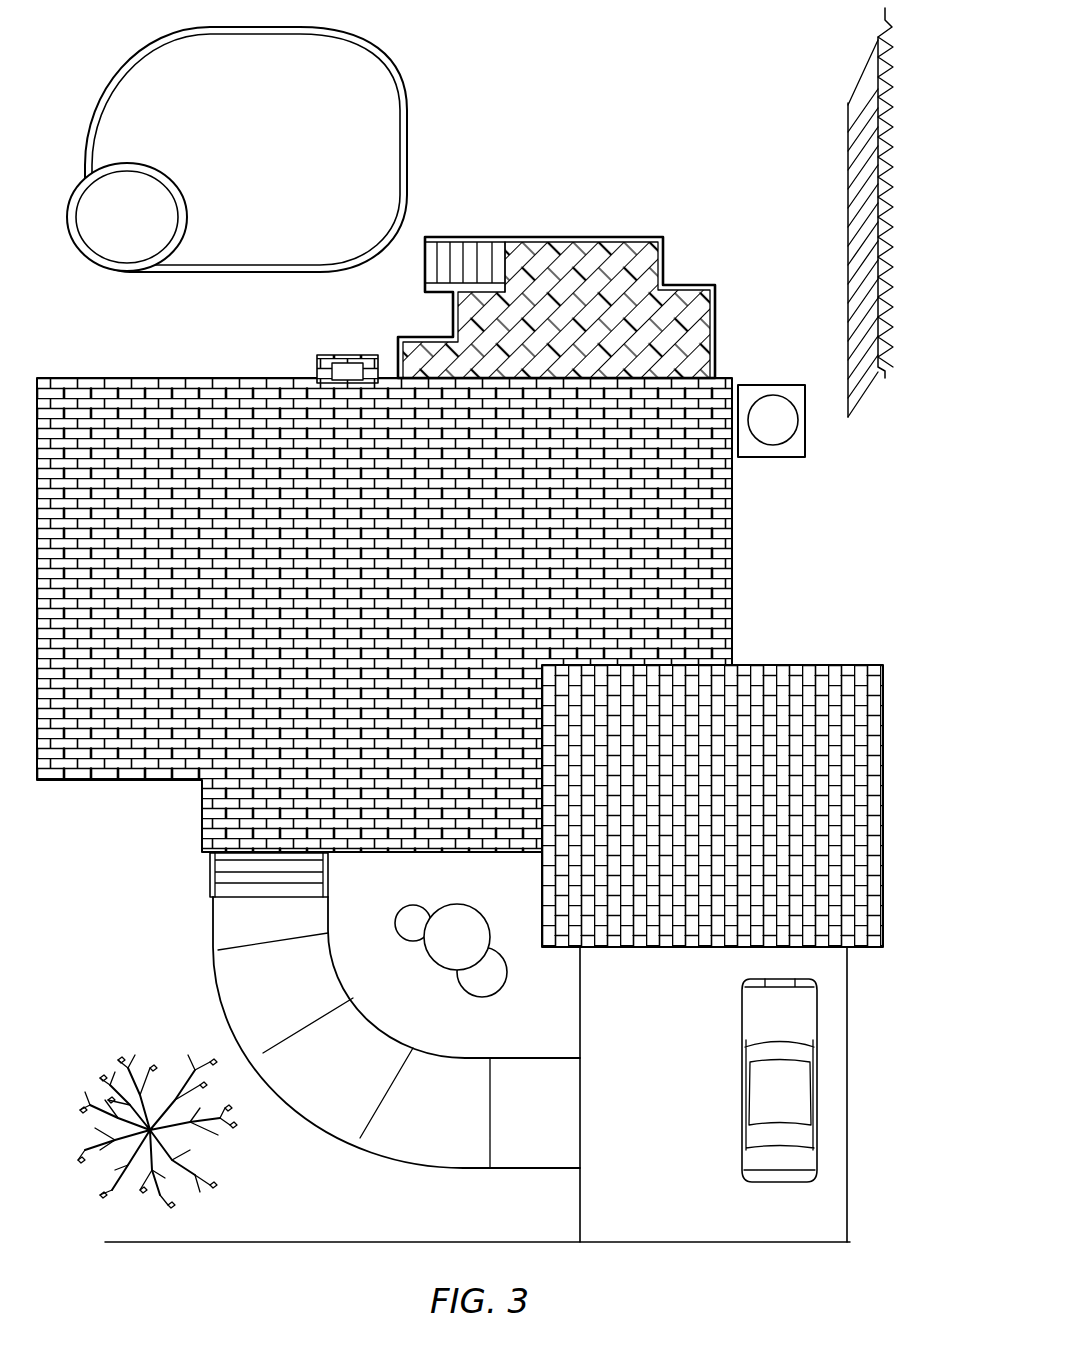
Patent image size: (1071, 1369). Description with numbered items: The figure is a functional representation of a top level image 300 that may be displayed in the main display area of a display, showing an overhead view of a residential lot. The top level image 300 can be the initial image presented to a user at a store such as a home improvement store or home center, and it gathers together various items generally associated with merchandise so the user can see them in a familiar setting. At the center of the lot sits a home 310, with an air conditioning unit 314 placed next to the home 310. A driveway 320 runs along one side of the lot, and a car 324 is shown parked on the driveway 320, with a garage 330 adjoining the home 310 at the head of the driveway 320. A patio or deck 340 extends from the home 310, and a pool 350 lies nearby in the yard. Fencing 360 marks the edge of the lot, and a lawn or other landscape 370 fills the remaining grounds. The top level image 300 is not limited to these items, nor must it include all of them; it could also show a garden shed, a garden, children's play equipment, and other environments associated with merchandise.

The top level image 300 is at (620, 94).
The home 310 is at (196, 392).
The air conditioning unit 314 is at (768, 427).
The driveway 320 is at (655, 1220).
The car 324 is at (763, 1018).
The garage 330 is at (778, 688).
The patio or deck 340 is at (672, 325).
The pool 350 is at (365, 127).
The fencing 360 is at (863, 78).
The lawn or other landscape 370 is at (145, 993).